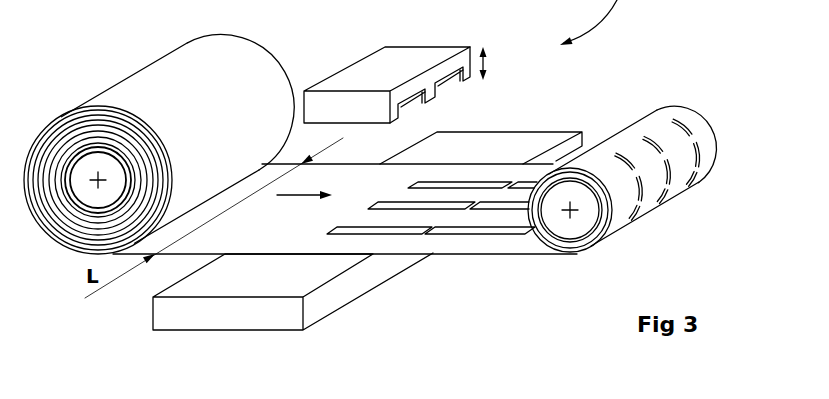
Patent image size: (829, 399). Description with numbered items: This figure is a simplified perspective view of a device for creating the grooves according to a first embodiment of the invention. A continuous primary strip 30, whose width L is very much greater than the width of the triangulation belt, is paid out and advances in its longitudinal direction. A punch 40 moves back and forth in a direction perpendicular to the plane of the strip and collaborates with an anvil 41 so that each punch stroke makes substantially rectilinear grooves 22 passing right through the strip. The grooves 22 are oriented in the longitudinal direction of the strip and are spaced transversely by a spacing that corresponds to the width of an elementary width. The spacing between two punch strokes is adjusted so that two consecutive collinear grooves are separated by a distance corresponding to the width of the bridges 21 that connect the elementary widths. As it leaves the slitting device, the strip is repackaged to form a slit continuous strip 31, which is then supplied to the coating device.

The continuous primary strip 30 is at (143, 83).
The punch 40 is at (382, 72).
The anvil 41 is at (330, 300).
The bridges 21 is at (493, 188).
The grooves 22 is at (390, 228).
The slit continuous strip 31 is at (700, 163).